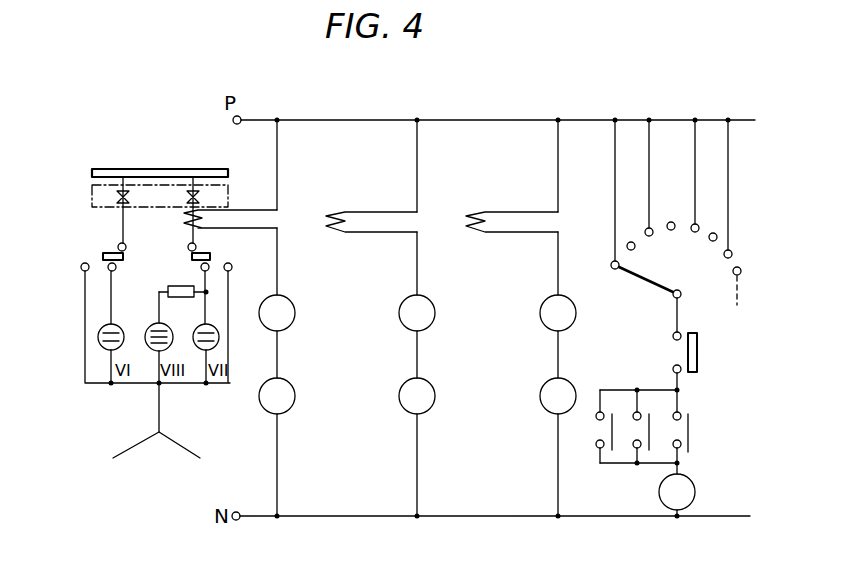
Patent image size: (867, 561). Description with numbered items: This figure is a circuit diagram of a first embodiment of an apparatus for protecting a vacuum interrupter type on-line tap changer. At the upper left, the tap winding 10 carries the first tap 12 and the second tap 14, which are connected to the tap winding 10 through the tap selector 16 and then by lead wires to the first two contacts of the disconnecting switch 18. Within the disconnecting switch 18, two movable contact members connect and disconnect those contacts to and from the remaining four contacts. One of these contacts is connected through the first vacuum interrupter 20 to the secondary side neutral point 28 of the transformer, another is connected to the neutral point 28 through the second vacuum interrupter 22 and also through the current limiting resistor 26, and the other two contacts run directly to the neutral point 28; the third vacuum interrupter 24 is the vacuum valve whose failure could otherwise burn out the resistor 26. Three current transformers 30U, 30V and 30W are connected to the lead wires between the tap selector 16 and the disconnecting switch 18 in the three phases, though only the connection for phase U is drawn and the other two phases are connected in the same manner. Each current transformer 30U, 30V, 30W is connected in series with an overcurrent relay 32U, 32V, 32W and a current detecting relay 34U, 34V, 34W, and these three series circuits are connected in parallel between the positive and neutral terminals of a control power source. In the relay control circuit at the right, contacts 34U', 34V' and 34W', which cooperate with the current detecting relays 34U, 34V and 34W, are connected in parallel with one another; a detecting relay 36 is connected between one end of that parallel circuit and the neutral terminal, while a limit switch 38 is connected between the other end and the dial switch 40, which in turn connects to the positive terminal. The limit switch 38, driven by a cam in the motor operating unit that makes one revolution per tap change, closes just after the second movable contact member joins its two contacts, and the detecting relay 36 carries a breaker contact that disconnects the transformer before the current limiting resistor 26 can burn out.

The tap winding 10 is at (153, 168).
The tap no. 1 12 is at (122, 190).
The tap no. 2 14 is at (193, 190).
The tap selector 16 is at (92, 196).
The disconnecting switch 18 is at (77, 248).
The vacuum interrupter VI 20 is at (98, 337).
The vacuum interrupter VII 22 is at (220, 337).
The vacuum interrupter VIII 24 is at (150, 346).
The current limiting resistor 26 is at (181, 298).
The secondary side neutral point of a transformer 28 is at (163, 432).
The current transformer 30U is at (203, 213).
The current transformer 30V is at (336, 211).
The current transformer 30W is at (476, 211).
The overcurrent relay 32U is at (264, 406).
The overcurrent relay 32V is at (404, 400).
The overcurrent relay 32W is at (544, 400).
The current detecting relay 34U is at (304, 325).
The current detecting relay 34V is at (444, 325).
The current detecting relay 34W is at (535, 318).
The contact 34U' is at (586, 445).
The contact 34V' is at (628, 447).
The contact 34W' is at (719, 430).
The detecting relay 36 is at (696, 493).
The limit switch 38 is at (698, 357).
The dial switch 40 is at (636, 276).